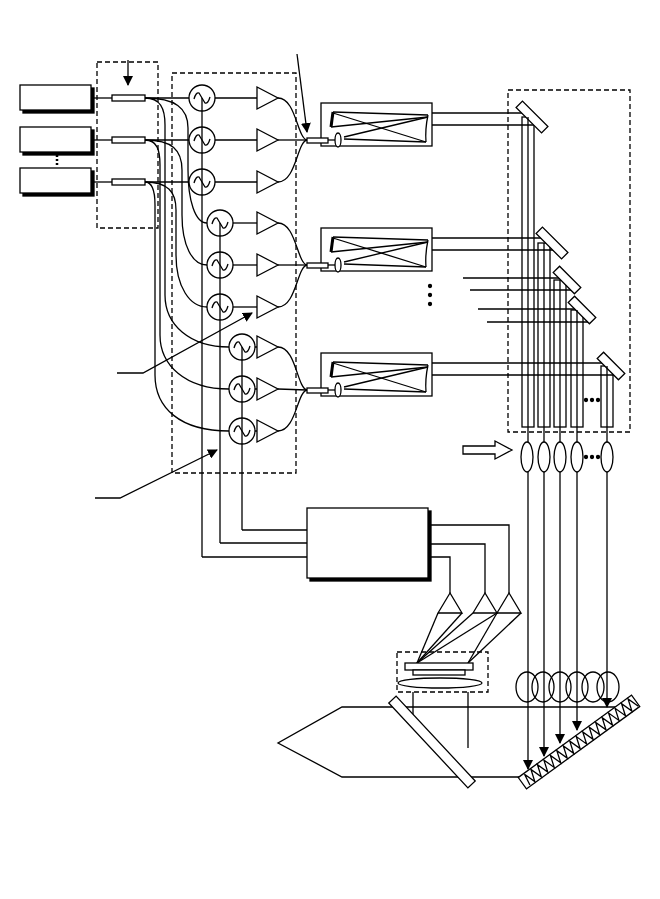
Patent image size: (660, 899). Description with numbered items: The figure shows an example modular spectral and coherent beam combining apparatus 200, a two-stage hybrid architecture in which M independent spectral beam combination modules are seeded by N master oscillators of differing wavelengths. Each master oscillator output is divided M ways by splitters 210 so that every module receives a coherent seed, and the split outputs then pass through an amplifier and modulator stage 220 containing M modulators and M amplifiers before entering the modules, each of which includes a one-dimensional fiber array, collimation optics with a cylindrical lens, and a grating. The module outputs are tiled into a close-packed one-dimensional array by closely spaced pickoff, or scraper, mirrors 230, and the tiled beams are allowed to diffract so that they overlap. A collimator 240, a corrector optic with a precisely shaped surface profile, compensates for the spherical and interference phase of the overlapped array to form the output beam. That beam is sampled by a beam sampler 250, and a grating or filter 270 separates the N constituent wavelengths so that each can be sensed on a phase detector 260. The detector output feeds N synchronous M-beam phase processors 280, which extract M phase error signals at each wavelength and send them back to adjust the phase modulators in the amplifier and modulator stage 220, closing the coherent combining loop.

The modular spectral and coherent beam combining apparatus 200 is at (586, 70).
The splitters 210 is at (163, 70).
The amplifier and modulator stage 220 is at (297, 326).
The pickoff mirrors 230 is at (565, 88).
The collimator 240 is at (587, 748).
The beam sampler 250 is at (430, 748).
The phase detector 260 is at (509, 620).
The grating or filter 270 is at (482, 692).
The N synchronous M-beam phase processors 280 is at (372, 582).